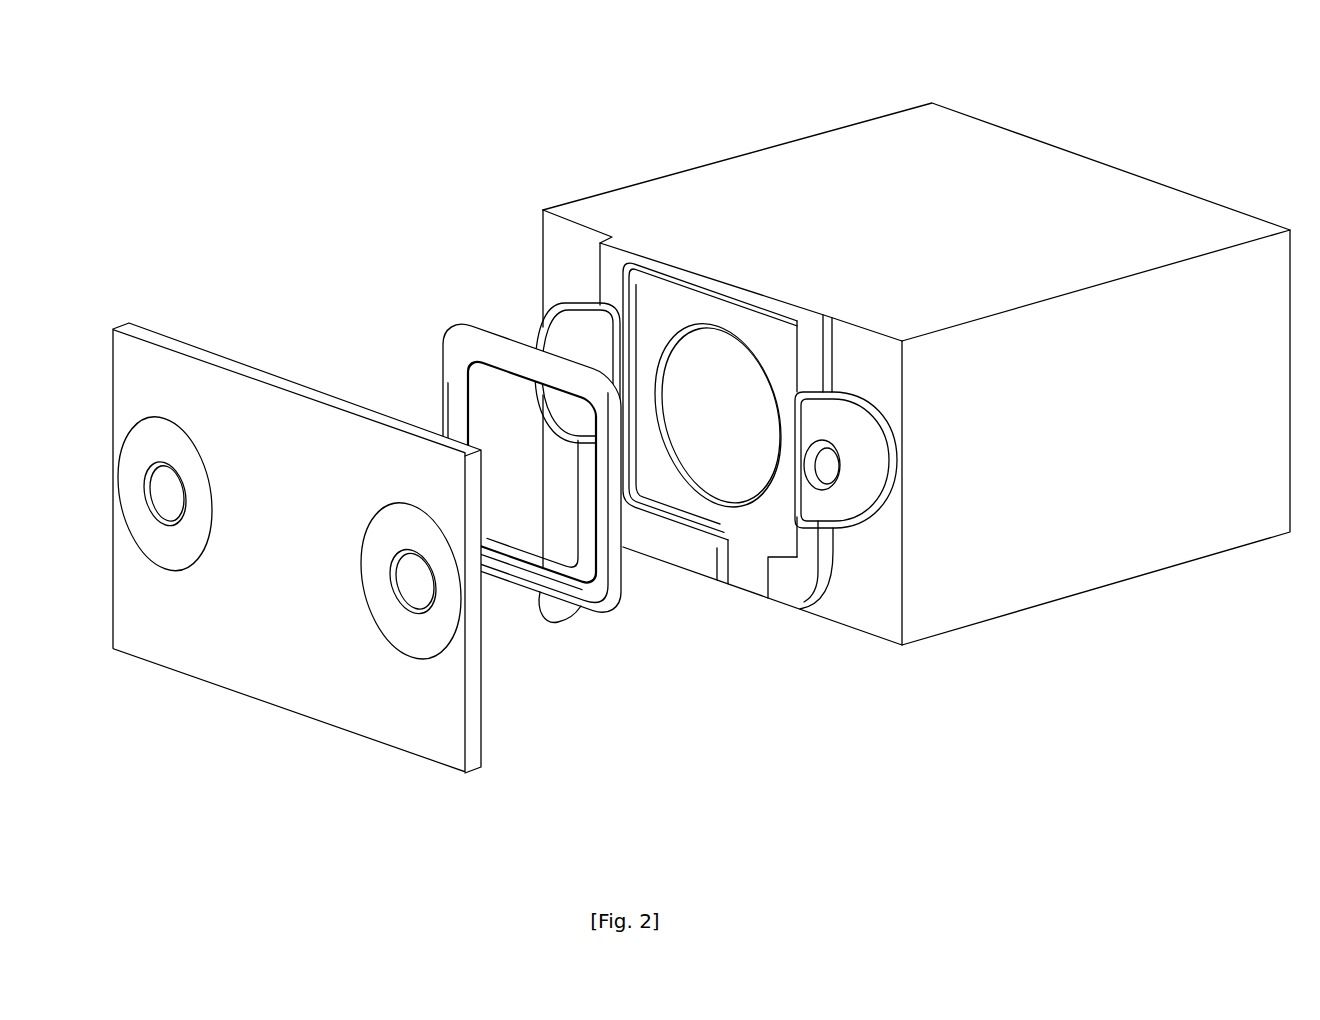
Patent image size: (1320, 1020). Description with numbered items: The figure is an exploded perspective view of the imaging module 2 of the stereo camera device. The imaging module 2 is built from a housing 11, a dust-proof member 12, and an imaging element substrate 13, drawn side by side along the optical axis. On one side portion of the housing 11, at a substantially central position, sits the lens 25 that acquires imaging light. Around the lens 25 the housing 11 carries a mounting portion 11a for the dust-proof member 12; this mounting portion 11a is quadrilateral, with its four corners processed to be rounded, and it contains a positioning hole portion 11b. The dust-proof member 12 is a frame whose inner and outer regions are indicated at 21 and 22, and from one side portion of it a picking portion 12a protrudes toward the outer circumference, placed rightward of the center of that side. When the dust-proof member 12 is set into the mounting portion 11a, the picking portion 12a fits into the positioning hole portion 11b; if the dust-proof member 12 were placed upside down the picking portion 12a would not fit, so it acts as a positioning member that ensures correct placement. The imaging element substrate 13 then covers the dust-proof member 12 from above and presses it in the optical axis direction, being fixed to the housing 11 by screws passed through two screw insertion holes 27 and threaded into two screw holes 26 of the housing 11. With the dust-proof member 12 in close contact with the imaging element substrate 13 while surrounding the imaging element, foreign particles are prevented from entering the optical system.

The imaging module 2 is at (868, 72).
The housing 11 is at (1068, 164).
The mounting portion 11a is at (660, 314).
The positioning hole portion 11b is at (746, 562).
The dust-proof member 12 is at (456, 345).
The picking portion 12a is at (557, 621).
The imaging element substrate 13 is at (285, 384).
The inner lip of gasket 21 is at (502, 385).
The flange of gasket 22 is at (512, 341).
The lens 25 is at (716, 422).
The screw holes 26 is at (571, 350).
The screw insertion holes 27 is at (160, 502).